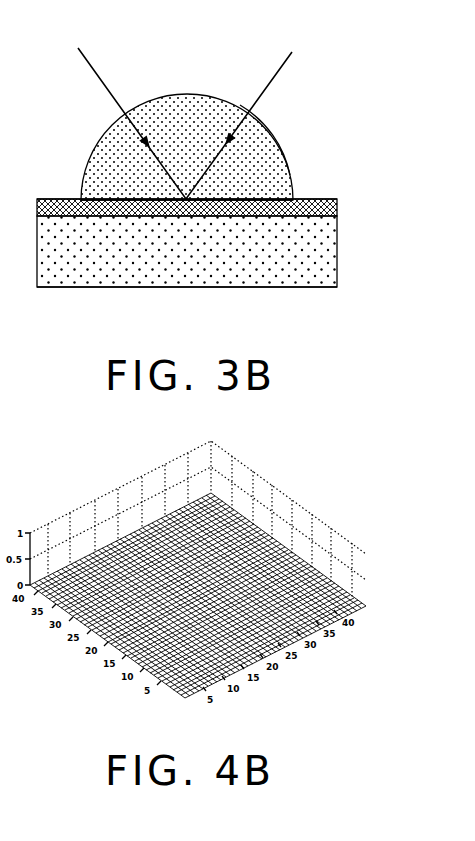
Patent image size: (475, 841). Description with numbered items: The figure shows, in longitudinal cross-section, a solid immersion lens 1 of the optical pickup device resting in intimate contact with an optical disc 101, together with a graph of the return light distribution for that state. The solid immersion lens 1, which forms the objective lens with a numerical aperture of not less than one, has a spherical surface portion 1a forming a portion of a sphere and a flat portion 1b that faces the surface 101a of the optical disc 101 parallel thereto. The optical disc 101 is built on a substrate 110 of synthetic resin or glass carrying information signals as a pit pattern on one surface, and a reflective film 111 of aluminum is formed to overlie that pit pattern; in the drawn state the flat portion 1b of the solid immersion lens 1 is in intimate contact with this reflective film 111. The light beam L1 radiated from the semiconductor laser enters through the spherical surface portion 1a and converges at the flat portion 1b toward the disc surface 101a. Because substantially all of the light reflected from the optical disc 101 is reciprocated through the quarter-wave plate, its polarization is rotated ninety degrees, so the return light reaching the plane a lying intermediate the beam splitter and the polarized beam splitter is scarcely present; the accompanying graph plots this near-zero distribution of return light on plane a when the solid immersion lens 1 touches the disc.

The solid immersion lens 1 is at (200, 93).
The spherical surface portion 1a is at (272, 134).
The flat portion 1b is at (300, 199).
The light beam L1 is at (90, 62).
The optical disc 101 is at (383, 241).
The surface of optical disc 101a is at (50, 200).
The substrate 110 is at (337, 278).
The reflective film 111 is at (339, 201).
The plane A a is at (7, 190).